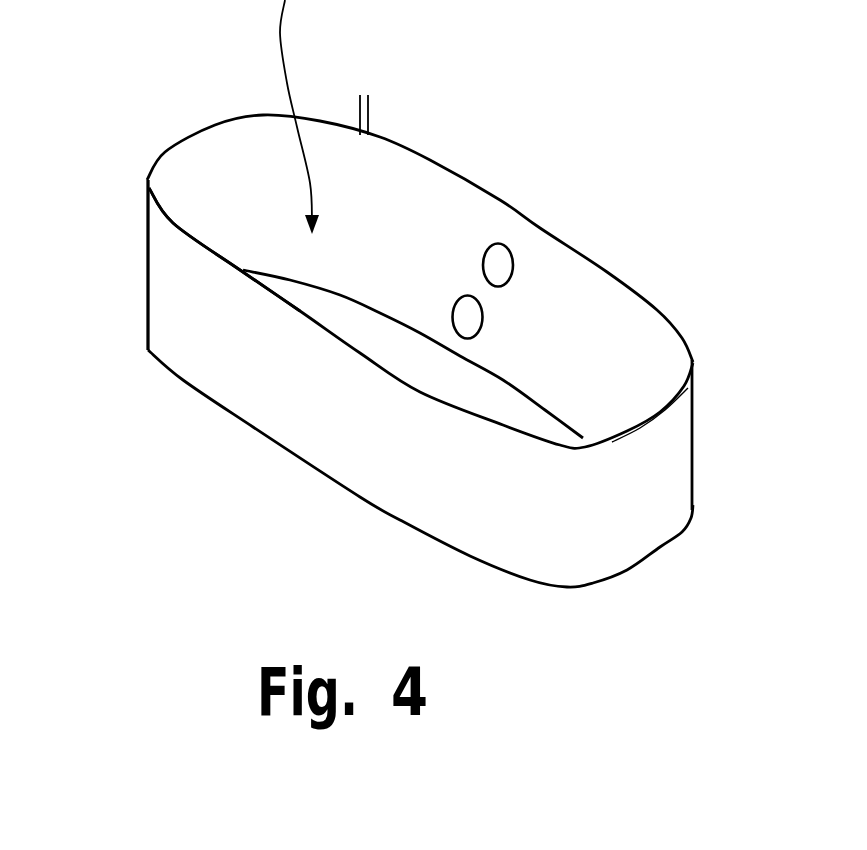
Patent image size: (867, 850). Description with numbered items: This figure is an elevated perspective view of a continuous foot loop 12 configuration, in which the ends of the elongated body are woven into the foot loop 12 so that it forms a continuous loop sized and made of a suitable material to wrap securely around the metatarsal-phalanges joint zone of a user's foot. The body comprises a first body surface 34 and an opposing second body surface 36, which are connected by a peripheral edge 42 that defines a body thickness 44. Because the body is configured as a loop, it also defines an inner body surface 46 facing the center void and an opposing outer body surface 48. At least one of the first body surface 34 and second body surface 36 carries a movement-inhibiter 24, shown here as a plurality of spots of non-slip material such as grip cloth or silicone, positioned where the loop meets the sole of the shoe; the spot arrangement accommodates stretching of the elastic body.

The foot loop 12 is at (652, 243).
The movement-inhibiter 24 is at (502, 256).
The first body surface 34 is at (197, 337).
The second body surface 36 is at (430, 218).
The peripheral edge 42 is at (233, 116).
The body thickness 44 is at (362, 82).
The inner body surface 46 is at (606, 355).
The outer body surface 48 is at (325, 434).